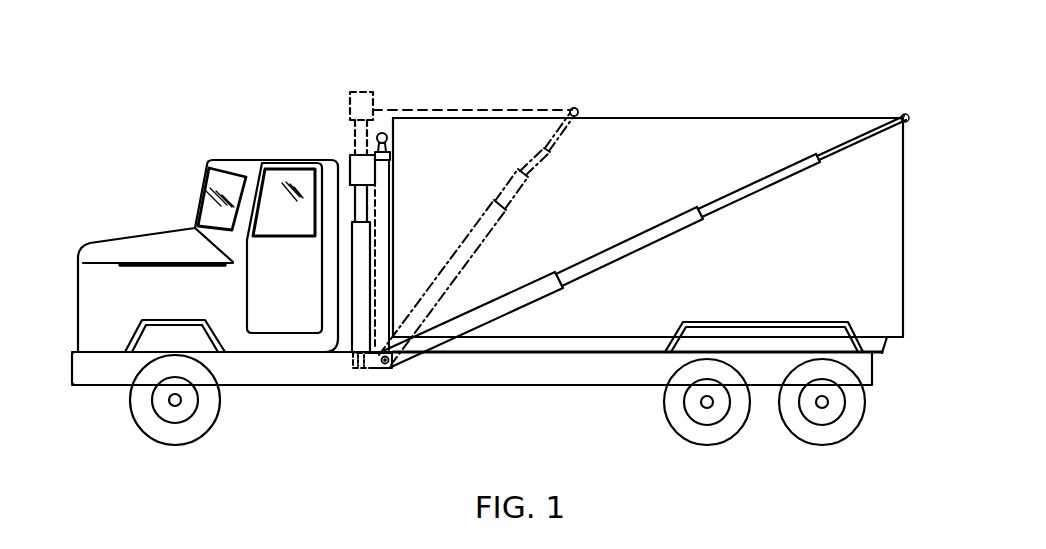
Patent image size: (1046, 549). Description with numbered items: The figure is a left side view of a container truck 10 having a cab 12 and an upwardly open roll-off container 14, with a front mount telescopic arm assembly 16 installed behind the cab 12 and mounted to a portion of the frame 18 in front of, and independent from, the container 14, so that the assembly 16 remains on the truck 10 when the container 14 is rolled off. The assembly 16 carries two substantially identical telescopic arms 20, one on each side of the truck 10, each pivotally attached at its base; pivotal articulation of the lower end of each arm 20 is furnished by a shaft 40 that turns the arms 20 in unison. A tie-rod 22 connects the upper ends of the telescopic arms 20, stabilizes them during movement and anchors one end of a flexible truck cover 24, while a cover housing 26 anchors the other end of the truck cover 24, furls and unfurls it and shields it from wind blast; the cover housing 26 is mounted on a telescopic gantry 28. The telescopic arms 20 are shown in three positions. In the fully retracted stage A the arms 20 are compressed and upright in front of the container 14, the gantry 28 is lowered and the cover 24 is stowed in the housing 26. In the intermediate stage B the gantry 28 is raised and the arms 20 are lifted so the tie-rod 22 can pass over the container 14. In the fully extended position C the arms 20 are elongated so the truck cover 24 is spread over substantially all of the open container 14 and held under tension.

The container truck 10 is at (380, 424).
The cab 12 is at (242, 160).
The roll-off container 14 is at (757, 137).
The front mount telescopic arm assembly 16 is at (350, 272).
The frame 18 is at (265, 367).
The telescopic arm 20 is at (640, 235).
The tie-rod 22 is at (578, 108).
The truck cover 24 is at (440, 110).
The cover housing 26 is at (350, 158).
The telescopic gantry 28 is at (352, 357).
The shaft 40 is at (392, 368).
The fully retracted stage A is at (392, 170).
The intermediate stage B is at (537, 153).
The fully extended position C is at (670, 218).